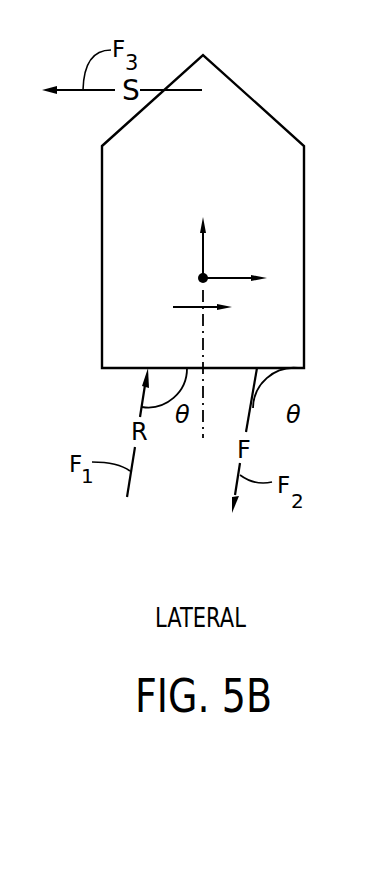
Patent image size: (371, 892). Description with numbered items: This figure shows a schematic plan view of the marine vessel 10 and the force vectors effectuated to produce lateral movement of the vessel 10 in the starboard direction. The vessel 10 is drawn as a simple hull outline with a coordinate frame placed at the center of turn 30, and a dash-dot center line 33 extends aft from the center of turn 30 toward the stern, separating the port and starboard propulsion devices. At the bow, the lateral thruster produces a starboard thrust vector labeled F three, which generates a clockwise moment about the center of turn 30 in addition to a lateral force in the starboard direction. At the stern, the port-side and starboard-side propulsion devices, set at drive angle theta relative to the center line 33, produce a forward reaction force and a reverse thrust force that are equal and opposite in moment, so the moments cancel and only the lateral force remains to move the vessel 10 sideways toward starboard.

The marine vessel 10 is at (255, 101).
The center of turn 30 is at (207, 275).
The center line 33 is at (200, 334).